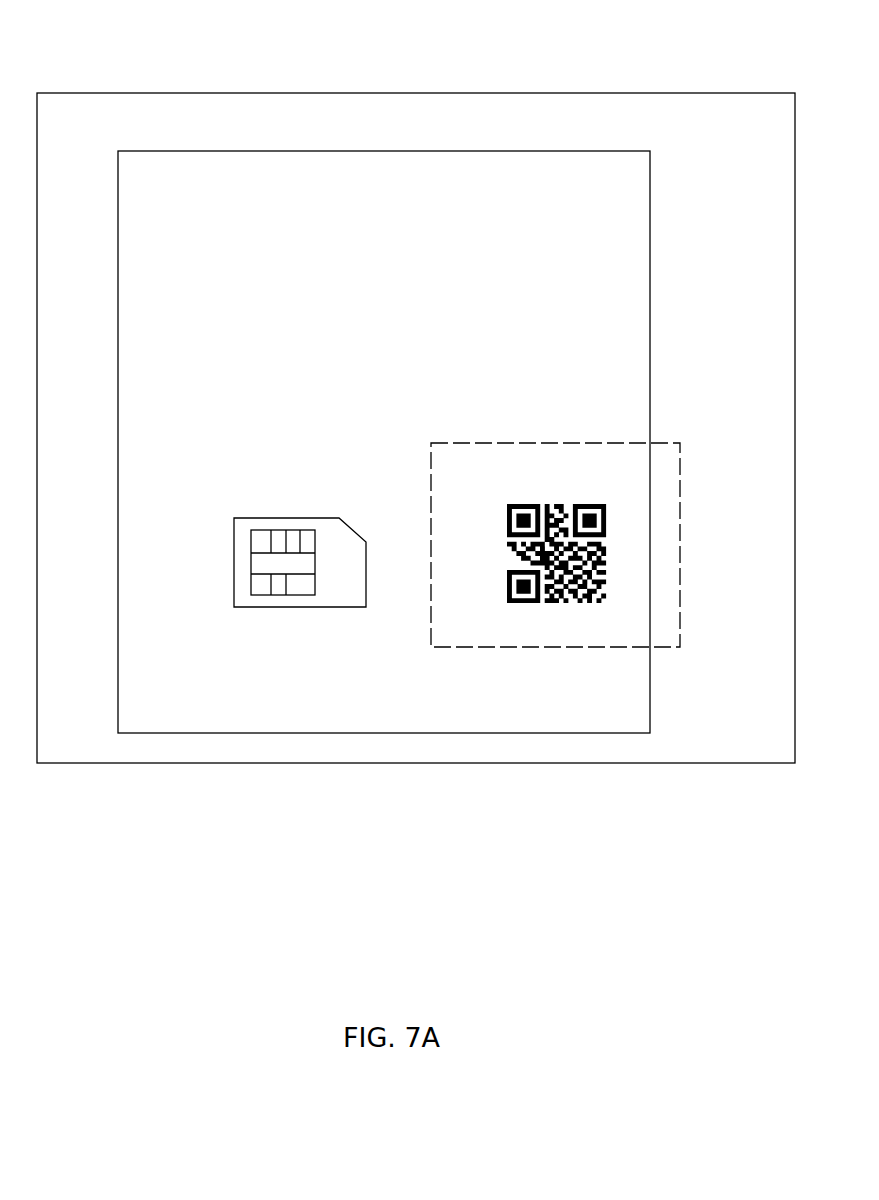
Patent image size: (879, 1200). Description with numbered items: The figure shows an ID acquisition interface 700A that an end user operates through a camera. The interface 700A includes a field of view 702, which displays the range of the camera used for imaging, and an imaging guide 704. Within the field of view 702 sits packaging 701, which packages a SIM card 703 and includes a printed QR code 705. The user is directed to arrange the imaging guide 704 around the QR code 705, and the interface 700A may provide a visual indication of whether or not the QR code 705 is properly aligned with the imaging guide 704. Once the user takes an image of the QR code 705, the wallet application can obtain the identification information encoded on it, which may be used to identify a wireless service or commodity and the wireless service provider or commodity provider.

The ID acquisition interface 700A is at (366, 36).
The packaging 701 is at (650, 208).
The field of view 702 is at (633, 92).
The SIM card 703 is at (297, 518).
The imaging guide 704 is at (678, 493).
The QR code 705 is at (538, 504).